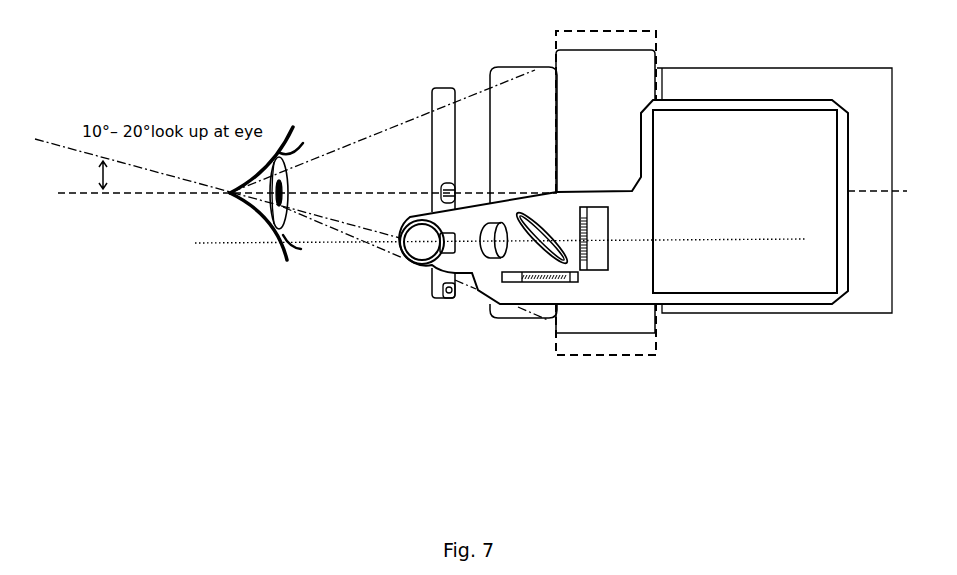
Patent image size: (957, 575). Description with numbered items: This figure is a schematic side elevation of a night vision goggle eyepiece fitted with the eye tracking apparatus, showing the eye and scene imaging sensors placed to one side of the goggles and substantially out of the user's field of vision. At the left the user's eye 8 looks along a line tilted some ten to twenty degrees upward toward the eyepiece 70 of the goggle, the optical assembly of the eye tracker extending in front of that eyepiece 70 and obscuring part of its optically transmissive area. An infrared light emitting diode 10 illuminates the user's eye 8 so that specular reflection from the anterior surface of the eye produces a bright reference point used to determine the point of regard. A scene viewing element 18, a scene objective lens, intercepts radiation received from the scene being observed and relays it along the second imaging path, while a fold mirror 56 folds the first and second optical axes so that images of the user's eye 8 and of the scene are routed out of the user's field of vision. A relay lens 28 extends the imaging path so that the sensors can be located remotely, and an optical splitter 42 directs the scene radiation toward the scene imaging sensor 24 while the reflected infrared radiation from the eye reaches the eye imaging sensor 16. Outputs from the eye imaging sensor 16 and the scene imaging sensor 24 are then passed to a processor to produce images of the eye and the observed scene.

The user's eye 8 is at (248, 207).
The eyepiece 70 is at (470, 145).
The infrared light emitting diode 10 is at (450, 299).
The scene viewing element 18 is at (443, 267).
The fold mirror 56 is at (420, 241).
The relay lens 28 is at (487, 258).
The optical splitter 42 is at (532, 242).
The scene imaging sensor 24 is at (550, 280).
The eye imaging sensor 16 is at (595, 238).